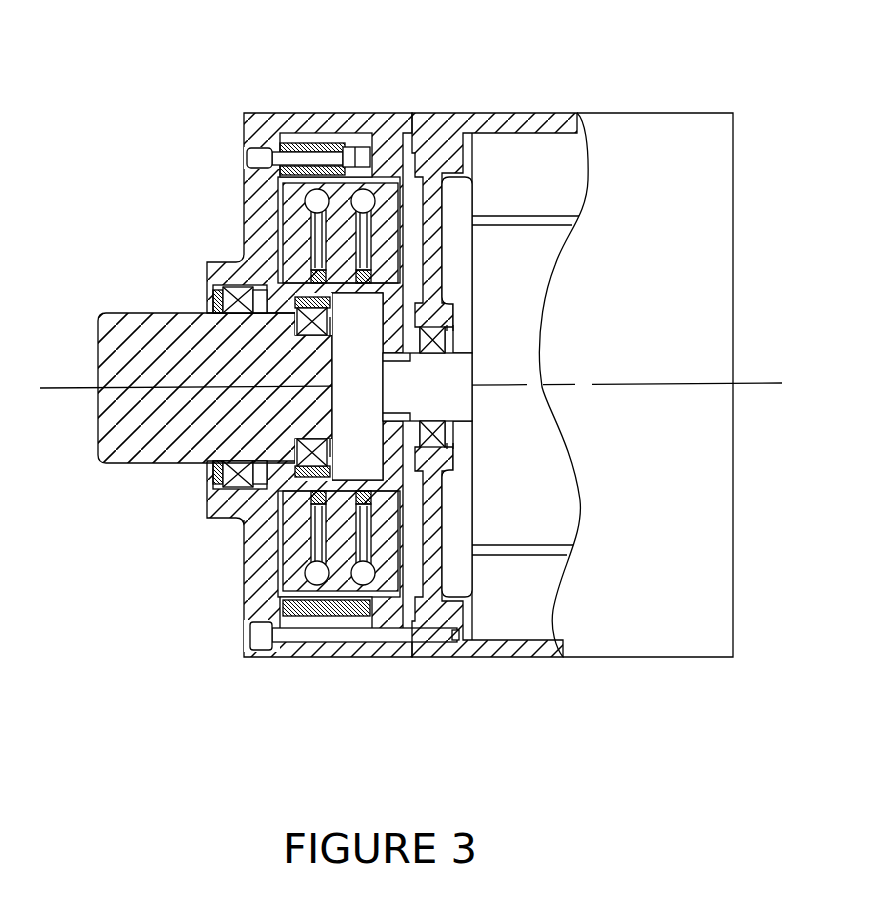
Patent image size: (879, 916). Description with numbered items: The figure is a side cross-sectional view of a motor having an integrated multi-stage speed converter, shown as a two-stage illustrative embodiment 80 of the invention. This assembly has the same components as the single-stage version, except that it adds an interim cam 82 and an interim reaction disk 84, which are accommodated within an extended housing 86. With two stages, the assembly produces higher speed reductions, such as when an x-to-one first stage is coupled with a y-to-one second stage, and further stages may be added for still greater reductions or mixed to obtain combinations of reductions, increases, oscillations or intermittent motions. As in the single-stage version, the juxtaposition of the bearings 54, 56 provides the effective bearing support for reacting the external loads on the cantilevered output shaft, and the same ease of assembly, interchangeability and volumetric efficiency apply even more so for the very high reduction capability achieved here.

The two-stage illustrative embodiment 80 is at (205, 175).
The interim cam 82 is at (333, 262).
The interim reaction disk 84 is at (338, 138).
The extended housing 86 is at (325, 113).
The bearing 56 is at (212, 277).
The bearing 54 is at (207, 518).